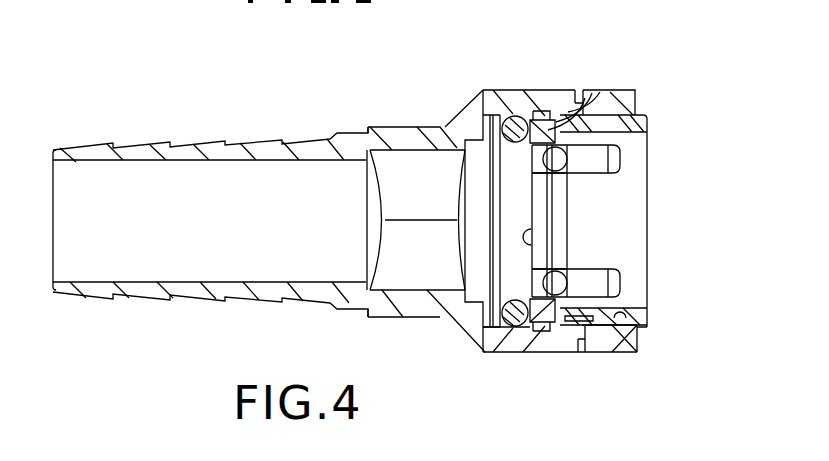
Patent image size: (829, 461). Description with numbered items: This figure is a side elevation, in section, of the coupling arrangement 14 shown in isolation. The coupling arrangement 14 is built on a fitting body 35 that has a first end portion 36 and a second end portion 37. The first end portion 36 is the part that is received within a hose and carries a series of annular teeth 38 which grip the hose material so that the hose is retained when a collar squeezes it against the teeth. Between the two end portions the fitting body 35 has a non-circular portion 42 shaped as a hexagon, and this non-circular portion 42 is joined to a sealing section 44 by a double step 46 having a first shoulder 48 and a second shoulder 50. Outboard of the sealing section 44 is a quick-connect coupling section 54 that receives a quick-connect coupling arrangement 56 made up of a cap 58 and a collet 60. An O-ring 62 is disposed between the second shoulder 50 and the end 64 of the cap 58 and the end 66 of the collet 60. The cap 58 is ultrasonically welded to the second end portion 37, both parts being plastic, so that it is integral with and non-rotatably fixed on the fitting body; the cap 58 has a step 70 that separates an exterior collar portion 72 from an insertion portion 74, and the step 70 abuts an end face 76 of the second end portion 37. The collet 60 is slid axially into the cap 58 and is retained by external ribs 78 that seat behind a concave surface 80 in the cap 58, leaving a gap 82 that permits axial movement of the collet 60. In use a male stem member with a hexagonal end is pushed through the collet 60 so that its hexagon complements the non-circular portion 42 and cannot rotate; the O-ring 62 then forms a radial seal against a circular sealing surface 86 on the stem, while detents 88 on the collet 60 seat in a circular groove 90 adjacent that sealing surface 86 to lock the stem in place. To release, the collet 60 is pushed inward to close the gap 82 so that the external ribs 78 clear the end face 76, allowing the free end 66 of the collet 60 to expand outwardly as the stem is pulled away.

The coupling arrangement 14 is at (543, 78).
The fitting body 35 is at (392, 118).
The first end portion 36 is at (138, 134).
The second end portion 37 is at (603, 362).
The annular teeth 38 is at (178, 142).
The non-circular portion 42 is at (435, 268).
The sealing section 44 is at (500, 112).
The double step 46 is at (464, 110).
The first shoulder 48 is at (447, 133).
The second shoulder 50 is at (488, 112).
The quick-connect coupling section 54 is at (553, 94).
The quick-connect coupling arrangement 56 is at (638, 154).
The cap 58 is at (649, 342).
The collet 60 is at (652, 314).
The O-ring 62 is at (490, 345).
The end of the cap 64 is at (530, 167).
The end of the collet 66 is at (522, 241).
The step 70 is at (576, 105).
The exterior collar portion 72 is at (637, 95).
The insertion portion 74 is at (590, 110).
The end face 76 is at (571, 341).
The external ribs 78 is at (600, 114).
The concave surface 80 is at (567, 157).
The gap 82 is at (629, 353).
The circular sealing surface 86 is at (518, 328).
The detents 88 is at (541, 100).
The circular groove 90 is at (538, 318).